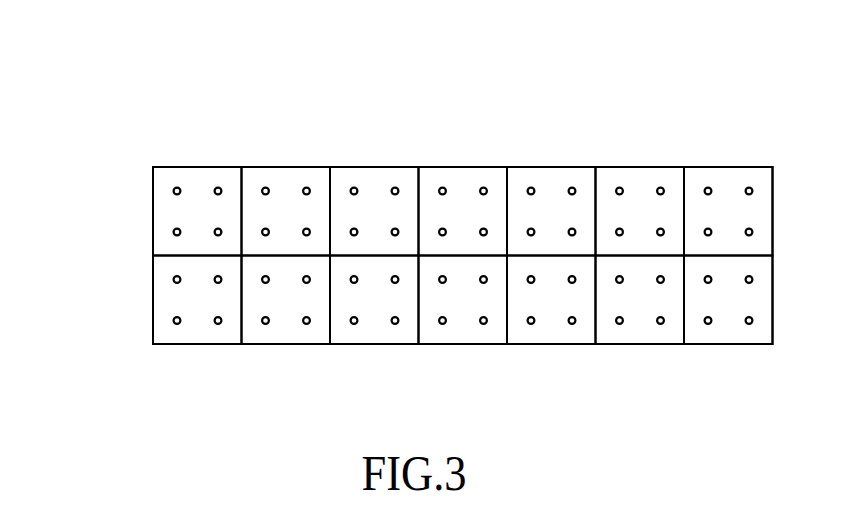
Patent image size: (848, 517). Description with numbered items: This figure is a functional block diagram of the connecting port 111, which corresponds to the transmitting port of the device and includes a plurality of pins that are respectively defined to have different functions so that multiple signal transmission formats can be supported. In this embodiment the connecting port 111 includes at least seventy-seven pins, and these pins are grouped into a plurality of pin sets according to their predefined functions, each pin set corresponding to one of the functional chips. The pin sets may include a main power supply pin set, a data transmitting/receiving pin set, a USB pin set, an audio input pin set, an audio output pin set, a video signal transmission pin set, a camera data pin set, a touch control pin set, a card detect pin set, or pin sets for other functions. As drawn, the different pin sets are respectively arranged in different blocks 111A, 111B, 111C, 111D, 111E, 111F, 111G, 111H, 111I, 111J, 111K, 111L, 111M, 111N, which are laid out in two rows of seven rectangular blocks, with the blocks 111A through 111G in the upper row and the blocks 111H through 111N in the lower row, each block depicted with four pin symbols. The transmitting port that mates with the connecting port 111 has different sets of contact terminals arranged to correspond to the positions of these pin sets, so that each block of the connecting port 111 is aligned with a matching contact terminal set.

The connecting port 111 is at (128, 108).
The block 111A is at (199, 207).
The block 111B is at (288, 207).
The block 111C is at (376, 207).
The block 111D is at (464, 207).
The block 111E is at (553, 207).
The block 111F is at (642, 207).
The block 111G is at (730, 207).
The block 111H is at (200, 305).
The block 111I is at (288, 305).
The block 111J is at (377, 305).
The block 111K is at (466, 305).
The block 111L is at (554, 305).
The block 111M is at (642, 305).
The block 111N is at (731, 305).